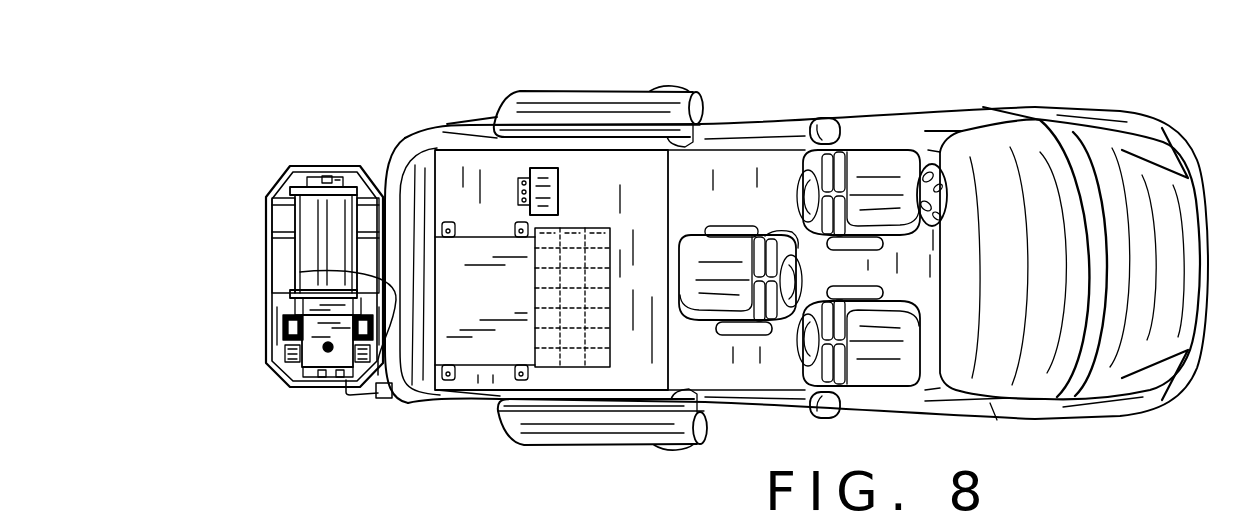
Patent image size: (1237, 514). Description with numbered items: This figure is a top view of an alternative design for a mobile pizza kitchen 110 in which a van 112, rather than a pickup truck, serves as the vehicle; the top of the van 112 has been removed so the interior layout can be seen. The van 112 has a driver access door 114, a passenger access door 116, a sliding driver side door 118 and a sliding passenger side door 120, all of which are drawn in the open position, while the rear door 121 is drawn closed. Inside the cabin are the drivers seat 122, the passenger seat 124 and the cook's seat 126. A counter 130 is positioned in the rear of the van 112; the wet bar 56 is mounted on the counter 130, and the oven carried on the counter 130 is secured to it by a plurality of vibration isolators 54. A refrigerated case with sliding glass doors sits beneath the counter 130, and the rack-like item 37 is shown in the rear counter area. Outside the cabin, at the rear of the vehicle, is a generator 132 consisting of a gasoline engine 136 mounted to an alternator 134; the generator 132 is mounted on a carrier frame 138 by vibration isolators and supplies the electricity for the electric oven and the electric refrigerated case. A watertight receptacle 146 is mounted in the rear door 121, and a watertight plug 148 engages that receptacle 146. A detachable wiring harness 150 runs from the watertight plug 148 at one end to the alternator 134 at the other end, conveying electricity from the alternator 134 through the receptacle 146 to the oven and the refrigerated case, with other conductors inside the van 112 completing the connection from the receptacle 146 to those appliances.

The storage rack 37 is at (597, 368).
The vibration isolators 54 is at (448, 378).
The wet bar 56 is at (540, 167).
The mobile pizza kitchen 110 is at (619, 58).
The van 112 is at (1100, 404).
The driver access door 114 is at (933, 122).
The passenger access door 116 is at (923, 407).
The sliding driver side door 118 is at (508, 100).
The sliding passenger side door 120 is at (560, 432).
The rear door 121 is at (395, 175).
The drivers seat 122 is at (870, 175).
The passenger seat 124 is at (886, 352).
The cook's seat 126 is at (733, 258).
The counter 130 is at (662, 205).
The generator 132 is at (321, 158).
The alternator 134 is at (327, 218).
The gasoline engine 136 is at (315, 345).
The carrier frame 138 is at (278, 178).
The watertight receptacle 146 is at (385, 398).
The watertight plug 148 is at (352, 390).
The detachable wiring harness 150 is at (300, 272).